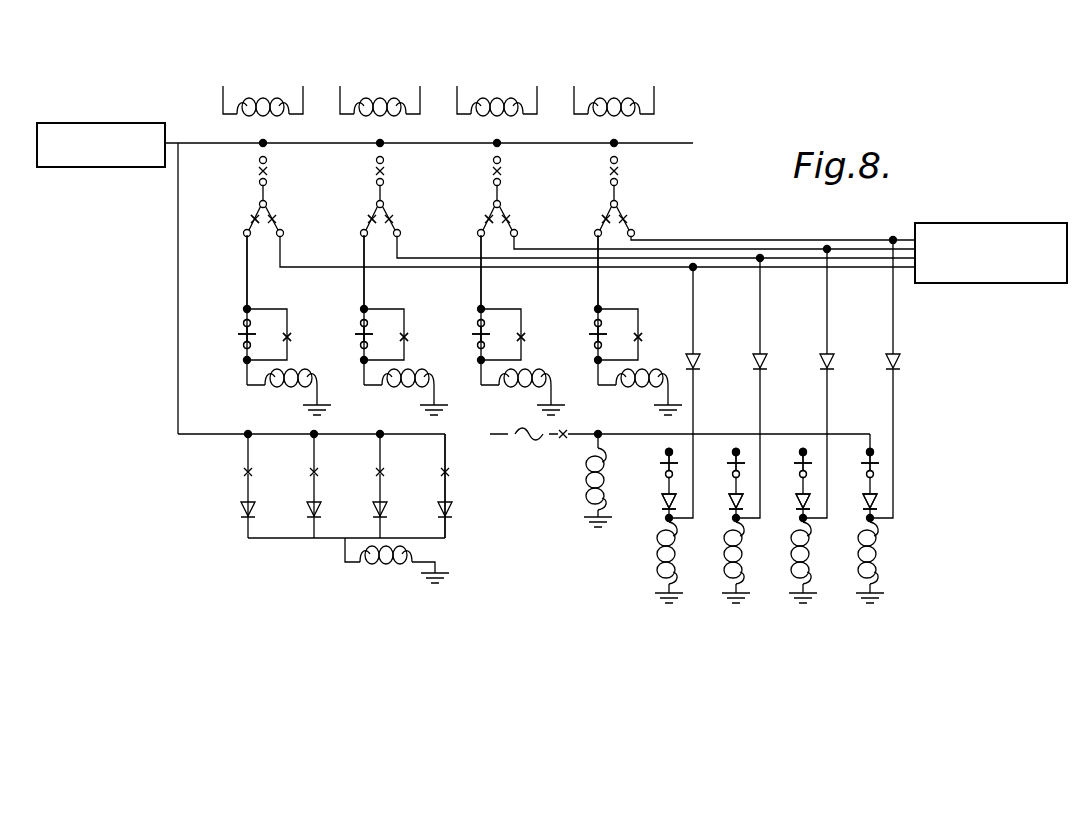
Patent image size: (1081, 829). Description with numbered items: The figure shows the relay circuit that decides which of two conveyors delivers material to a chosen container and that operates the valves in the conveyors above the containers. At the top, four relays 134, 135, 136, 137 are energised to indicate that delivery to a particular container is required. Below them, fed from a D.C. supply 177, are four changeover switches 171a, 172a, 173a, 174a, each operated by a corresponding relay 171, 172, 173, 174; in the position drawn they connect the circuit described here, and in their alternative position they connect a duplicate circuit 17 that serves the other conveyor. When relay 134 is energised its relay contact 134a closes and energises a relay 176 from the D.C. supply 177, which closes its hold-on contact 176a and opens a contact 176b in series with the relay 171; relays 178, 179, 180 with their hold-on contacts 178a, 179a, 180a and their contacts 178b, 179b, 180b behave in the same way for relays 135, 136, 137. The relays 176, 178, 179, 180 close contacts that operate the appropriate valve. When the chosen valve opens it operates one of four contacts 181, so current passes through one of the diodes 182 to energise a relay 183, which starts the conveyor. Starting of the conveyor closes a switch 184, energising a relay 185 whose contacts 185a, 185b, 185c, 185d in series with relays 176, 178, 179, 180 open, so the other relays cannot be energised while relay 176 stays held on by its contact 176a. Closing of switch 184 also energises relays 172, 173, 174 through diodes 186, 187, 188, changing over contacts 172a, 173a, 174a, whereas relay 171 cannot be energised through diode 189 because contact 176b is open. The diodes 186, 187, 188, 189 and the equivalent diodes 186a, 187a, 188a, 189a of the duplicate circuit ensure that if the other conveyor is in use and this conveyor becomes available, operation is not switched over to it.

The duplicate circuit 17 is at (1025, 283).
The relay 134 is at (258, 104).
The relay 135 is at (375, 104).
The relay 136 is at (492, 104).
The relay 137 is at (609, 104).
The relay contact 134a is at (268, 165).
The changeover switch 171a is at (254, 222).
The changeover switch 172a is at (370, 221).
The changeover switch 173a is at (487, 221).
The changeover switch 174a is at (605, 221).
The D.C. supply 177 is at (108, 165).
The contact 185a is at (242, 329).
The contact 185b is at (357, 332).
The contact 185c is at (473, 328).
The contact 185d is at (588, 330).
The hold-on contact 176a is at (289, 338).
The hold-on contact 178a is at (405, 338).
The hold-on contact 179a is at (522, 338).
The hold-on contact 180a is at (639, 338).
The relay 176 is at (277, 387).
The relay 178 is at (393, 387).
The relay 179 is at (510, 387).
The relay 180 is at (627, 387).
The contacts 181 is at (449, 472).
The diodes 182 is at (453, 510).
The relay 183 is at (388, 566).
The switch 184 is at (560, 438).
The relay 185 is at (592, 470).
The diode 189 is at (665, 507).
The contact 176b is at (664, 465).
The contact 178b is at (733, 463).
The contact 179b is at (800, 463).
The contact 180b is at (882, 463).
The diode 189a is at (694, 362).
The diode 186a is at (761, 362).
The diode 187a is at (828, 362).
The diode 188a is at (894, 362).
The diode 186 is at (732, 505).
The diode 187 is at (800, 505).
The diode 188 is at (867, 505).
The relay 171 is at (667, 555).
The relay 172 is at (727, 553).
The relay 173 is at (795, 553).
The relay 174 is at (865, 553).